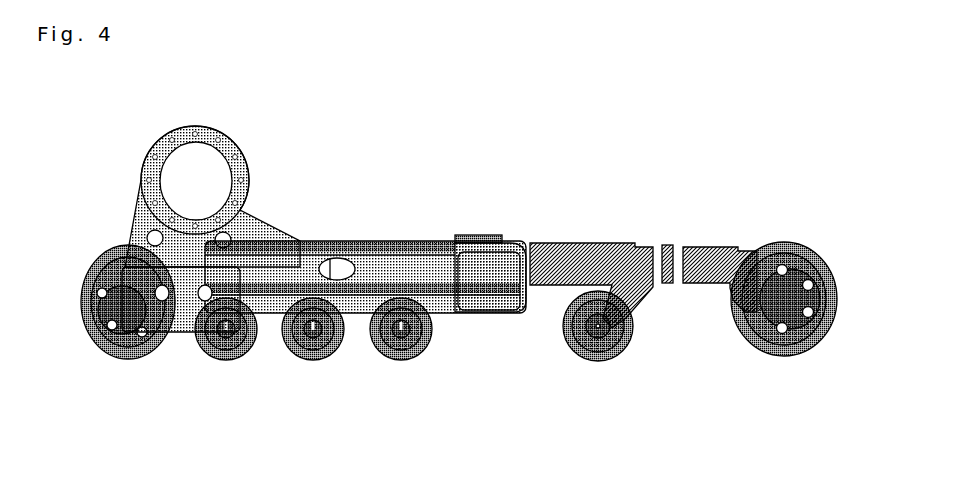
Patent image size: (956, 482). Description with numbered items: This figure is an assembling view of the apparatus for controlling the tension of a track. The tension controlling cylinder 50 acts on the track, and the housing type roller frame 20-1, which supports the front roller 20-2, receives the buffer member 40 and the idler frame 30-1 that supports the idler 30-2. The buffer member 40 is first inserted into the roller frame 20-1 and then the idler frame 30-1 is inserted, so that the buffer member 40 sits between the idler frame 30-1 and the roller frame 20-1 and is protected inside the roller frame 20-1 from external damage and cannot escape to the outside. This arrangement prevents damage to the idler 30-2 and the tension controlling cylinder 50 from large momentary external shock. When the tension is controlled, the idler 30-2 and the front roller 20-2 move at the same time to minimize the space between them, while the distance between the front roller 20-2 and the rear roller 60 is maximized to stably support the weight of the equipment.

The tension controlling cylinder 50 is at (468, 233).
The roller frame 20-1 is at (582, 252).
The front roller 20-2 is at (597, 362).
The buffer member 40 is at (665, 243).
The idler frame 30-1 is at (727, 247).
The idler 30-2 is at (806, 245).
The rear roller 60 is at (215, 360).